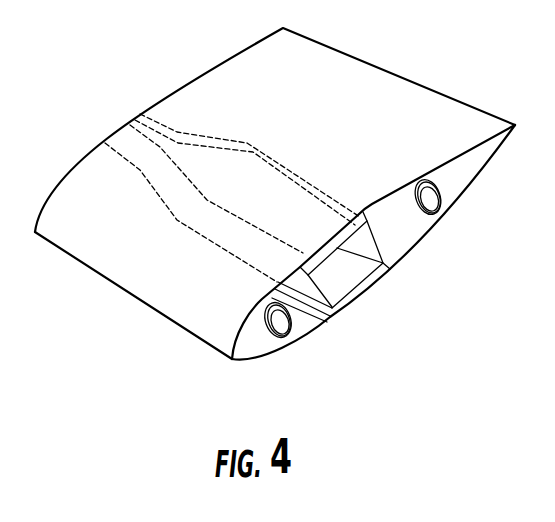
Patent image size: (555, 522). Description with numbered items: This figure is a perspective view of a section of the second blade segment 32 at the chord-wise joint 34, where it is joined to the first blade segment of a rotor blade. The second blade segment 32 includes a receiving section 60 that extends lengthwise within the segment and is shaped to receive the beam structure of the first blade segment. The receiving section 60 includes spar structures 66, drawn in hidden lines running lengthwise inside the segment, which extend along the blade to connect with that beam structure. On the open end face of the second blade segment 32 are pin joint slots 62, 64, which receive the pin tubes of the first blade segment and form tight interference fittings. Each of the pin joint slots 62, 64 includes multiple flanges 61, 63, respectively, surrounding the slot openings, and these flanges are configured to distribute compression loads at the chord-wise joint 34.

The second blade segment 32 is at (357, 69).
The chord-wise joint 34 is at (245, 352).
The receiving section 60 is at (356, 279).
The flanges 61 is at (266, 306).
The pin joint slot 62 is at (280, 323).
The flanges 63 is at (425, 182).
The pin joint slot 64 is at (436, 202).
The spar structures 66 is at (278, 164).